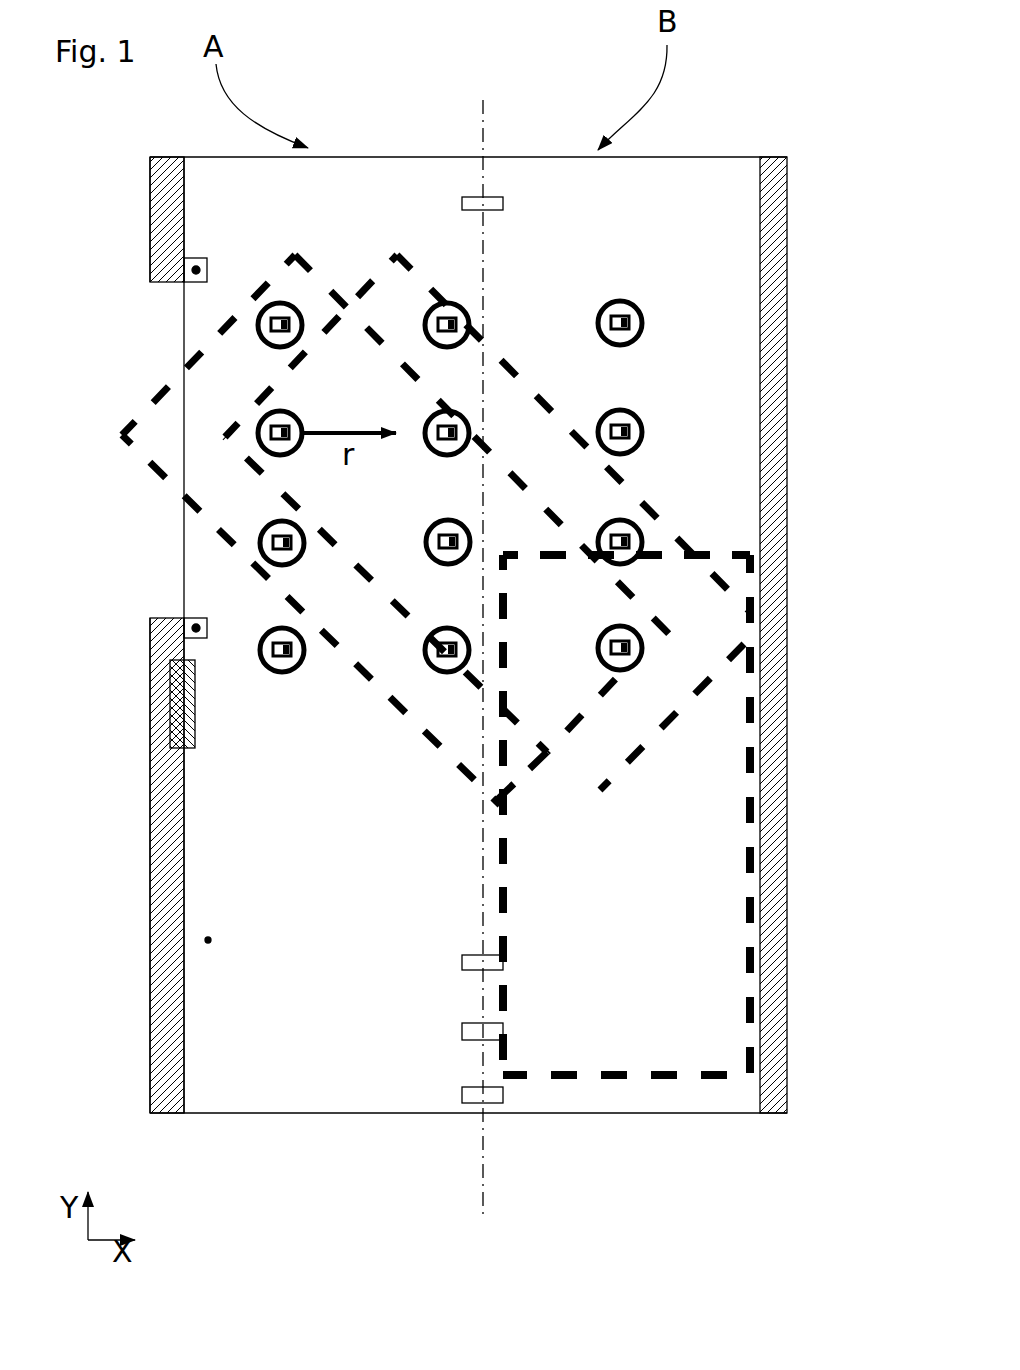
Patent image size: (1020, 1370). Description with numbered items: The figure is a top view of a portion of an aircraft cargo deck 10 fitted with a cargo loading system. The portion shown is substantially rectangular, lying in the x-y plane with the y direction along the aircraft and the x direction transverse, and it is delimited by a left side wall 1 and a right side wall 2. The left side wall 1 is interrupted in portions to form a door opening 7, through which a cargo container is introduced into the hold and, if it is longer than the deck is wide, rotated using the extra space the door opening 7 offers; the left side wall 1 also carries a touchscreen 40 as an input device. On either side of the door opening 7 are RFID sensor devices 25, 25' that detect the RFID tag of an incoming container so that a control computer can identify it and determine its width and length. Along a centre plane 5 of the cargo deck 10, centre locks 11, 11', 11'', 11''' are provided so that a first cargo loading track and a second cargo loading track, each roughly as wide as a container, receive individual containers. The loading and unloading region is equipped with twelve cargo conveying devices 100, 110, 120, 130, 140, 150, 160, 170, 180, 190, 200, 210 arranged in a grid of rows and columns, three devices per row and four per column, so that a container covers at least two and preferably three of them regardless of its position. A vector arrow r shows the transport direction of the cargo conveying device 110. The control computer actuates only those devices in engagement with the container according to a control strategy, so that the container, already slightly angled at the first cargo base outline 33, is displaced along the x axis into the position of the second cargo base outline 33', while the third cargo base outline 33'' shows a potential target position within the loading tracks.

The left side wall 1 is at (172, 1118).
The right side wall 2 is at (778, 148).
The centre plane 5 is at (466, 1155).
The door opening 7 is at (158, 449).
The cargo deck 10 is at (206, 940).
The centre lock 11 is at (521, 1163).
The centre lock 11' is at (502, 1147).
The centre lock 11'' is at (614, 1083).
The centre lock 11''' is at (540, 130).
The RFID sensor device 25 is at (129, 646).
The RFID sensor device 25' is at (129, 233).
The first cargo base outline 33 is at (653, 913).
The second cargo base outline 33' is at (726, 909).
The third cargo base outline 33'' is at (626, 1182).
The touchscreen 40 is at (165, 705).
The cargo conveying device 100 is at (255, 327).
The cargo conveying device 110 is at (255, 433).
The cargo conveying device 120 is at (256, 543).
The cargo conveying device 130 is at (256, 650).
The cargo conveying device 140 is at (447, 299).
The cargo conveying device 150 is at (447, 407).
The cargo conveying device 160 is at (422, 542).
The cargo conveying device 170 is at (447, 676).
The cargo conveying device 180 is at (620, 297).
The cargo conveying device 190 is at (646, 432).
The cargo conveying device 200 is at (657, 540).
The cargo conveying device 210 is at (646, 648).